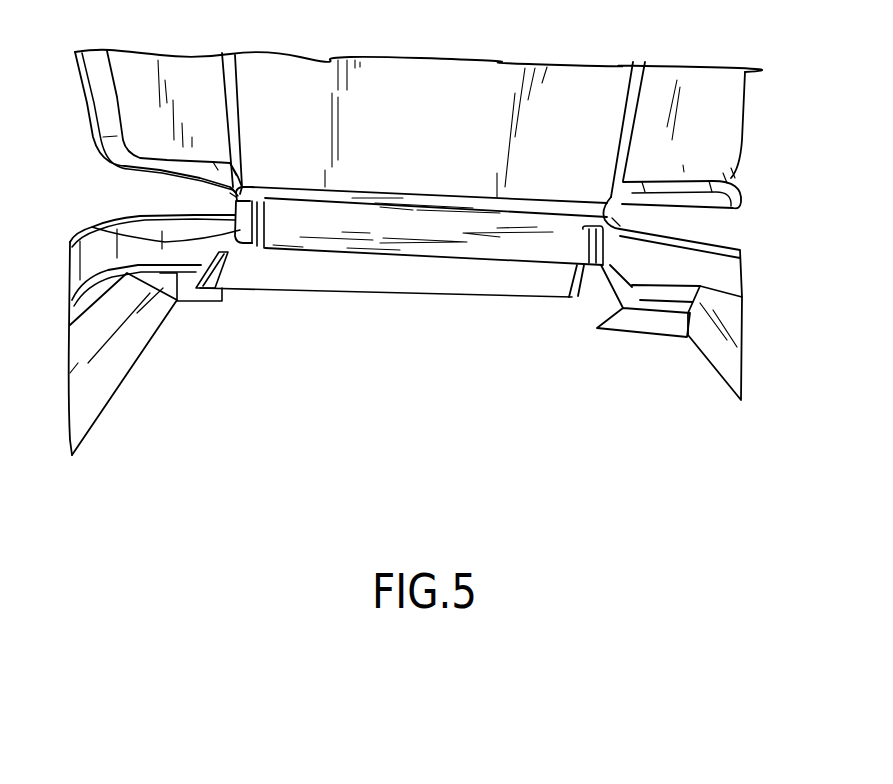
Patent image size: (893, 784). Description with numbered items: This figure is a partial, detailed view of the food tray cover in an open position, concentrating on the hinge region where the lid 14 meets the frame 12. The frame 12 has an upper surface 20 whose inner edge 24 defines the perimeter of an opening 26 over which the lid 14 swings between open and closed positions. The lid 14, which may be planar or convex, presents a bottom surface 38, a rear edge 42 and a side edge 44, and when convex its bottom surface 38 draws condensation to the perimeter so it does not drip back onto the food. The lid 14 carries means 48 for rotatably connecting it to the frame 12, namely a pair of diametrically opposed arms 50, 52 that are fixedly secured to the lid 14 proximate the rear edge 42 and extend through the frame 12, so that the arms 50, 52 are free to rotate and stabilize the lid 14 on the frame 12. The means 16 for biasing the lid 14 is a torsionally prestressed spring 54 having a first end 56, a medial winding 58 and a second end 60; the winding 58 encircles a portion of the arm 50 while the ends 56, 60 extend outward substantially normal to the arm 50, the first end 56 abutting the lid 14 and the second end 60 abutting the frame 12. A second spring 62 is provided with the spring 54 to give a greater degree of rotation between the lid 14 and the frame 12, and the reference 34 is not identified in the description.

The frame 12 is at (728, 282).
The lid 14 is at (730, 107).
The means for biasing the lid 16 is at (237, 245).
The upper surface 20 is at (735, 243).
The inner edge 24 is at (83, 305).
The opening 26 is at (553, 392).
The reinforcement plate 34 is at (80, 390).
The bottom surface 38 is at (720, 153).
The rear edge 42 is at (480, 267).
The side edge 44 is at (85, 102).
The means for rotatably connecting the lid to the frame 48 is at (262, 248).
The arm 50 is at (233, 195).
The arm 52 is at (618, 222).
The torsionally prestressed spring 54 is at (214, 291).
The first end 56 is at (237, 195).
The medial winding 58 is at (100, 228).
The second end 60 is at (247, 247).
The spring 62 is at (597, 307).